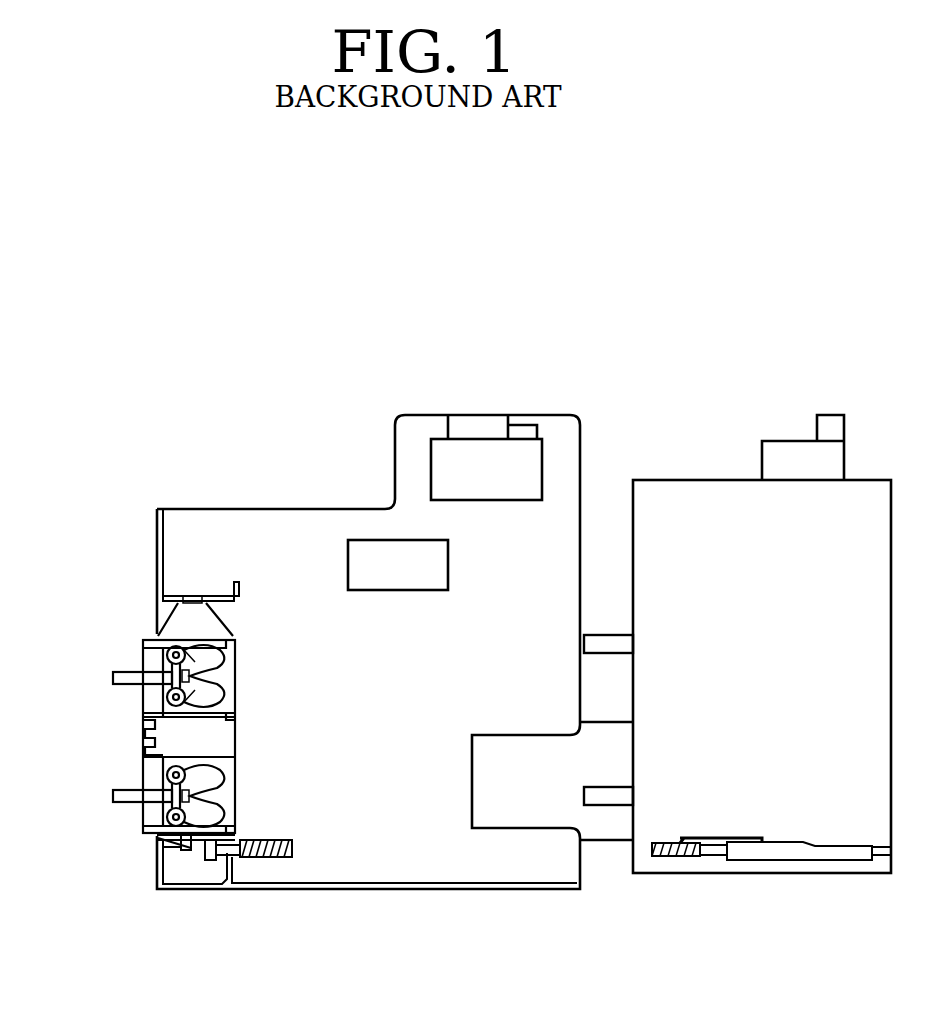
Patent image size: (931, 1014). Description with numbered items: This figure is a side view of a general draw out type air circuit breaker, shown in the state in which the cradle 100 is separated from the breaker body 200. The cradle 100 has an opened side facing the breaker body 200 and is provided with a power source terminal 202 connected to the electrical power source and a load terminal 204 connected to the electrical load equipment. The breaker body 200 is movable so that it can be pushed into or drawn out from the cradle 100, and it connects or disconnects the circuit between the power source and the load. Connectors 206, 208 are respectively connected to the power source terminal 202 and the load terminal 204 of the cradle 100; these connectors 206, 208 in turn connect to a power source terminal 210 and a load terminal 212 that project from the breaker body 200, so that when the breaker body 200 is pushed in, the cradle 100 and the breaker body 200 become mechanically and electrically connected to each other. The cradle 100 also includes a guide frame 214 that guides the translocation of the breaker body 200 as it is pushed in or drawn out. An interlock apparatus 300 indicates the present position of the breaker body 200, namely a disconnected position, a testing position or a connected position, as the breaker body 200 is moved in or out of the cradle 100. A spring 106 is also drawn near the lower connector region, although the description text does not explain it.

The cradle 100 is at (422, 862).
The spring 106 is at (273, 858).
The breaker body 200 is at (707, 497).
The power source terminal 202 is at (113, 677).
The load terminal 204 is at (113, 796).
The connector 206 is at (172, 656).
The connector 208 is at (212, 842).
The power source terminal 210 is at (604, 642).
The load terminal 212 is at (610, 798).
The guide frame 214 is at (590, 840).
The interlock apparatus 300 is at (742, 860).